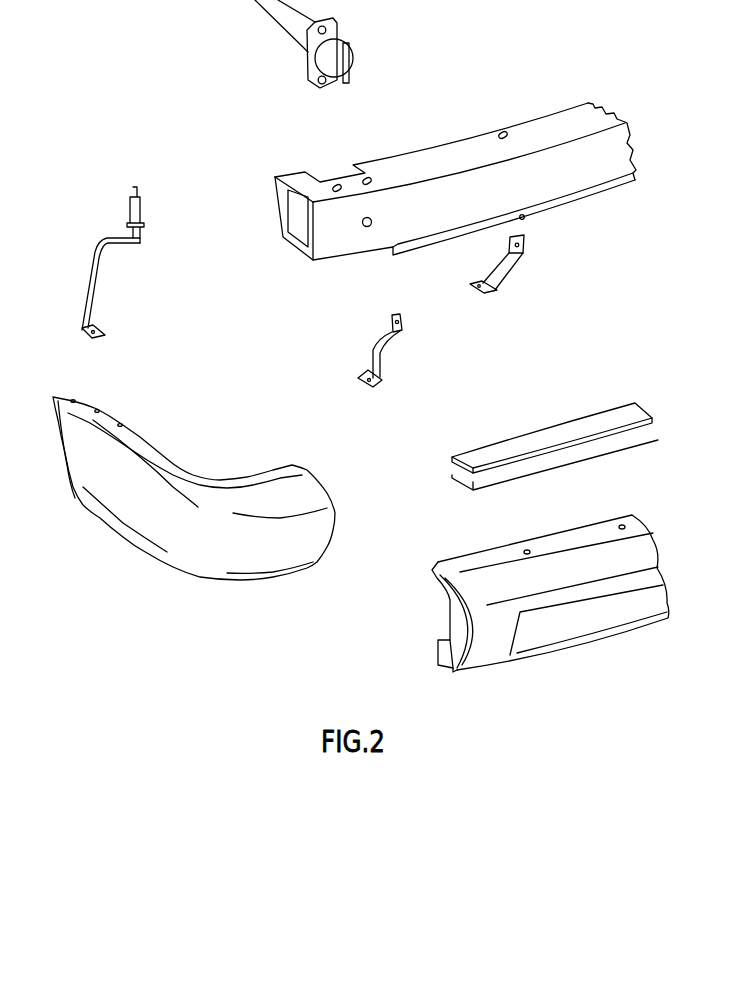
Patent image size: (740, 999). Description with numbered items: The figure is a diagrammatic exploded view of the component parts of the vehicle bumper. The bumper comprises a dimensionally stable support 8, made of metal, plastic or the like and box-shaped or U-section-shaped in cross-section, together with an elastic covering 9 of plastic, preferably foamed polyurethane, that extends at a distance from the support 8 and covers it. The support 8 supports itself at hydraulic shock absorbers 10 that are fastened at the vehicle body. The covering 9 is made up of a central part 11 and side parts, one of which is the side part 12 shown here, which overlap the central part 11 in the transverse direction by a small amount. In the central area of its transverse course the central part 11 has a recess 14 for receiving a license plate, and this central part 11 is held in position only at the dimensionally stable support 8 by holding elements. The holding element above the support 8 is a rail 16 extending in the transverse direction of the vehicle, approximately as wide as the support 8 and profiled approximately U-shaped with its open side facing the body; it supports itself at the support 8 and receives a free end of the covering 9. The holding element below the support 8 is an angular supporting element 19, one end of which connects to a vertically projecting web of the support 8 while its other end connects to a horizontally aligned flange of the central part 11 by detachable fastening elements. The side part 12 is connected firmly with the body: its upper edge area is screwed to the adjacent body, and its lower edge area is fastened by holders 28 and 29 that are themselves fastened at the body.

The dimensionally stable support 8 is at (557, 190).
The elastic covering 9 is at (269, 590).
The hydraulic shock absorber 10 is at (267, 12).
The central part 11 is at (559, 586).
The side part 12 is at (105, 523).
The recess 14 is at (585, 618).
The rail 16 is at (607, 420).
The angular supporting element 19 is at (503, 270).
The holder 28 is at (380, 353).
The holder 29 is at (93, 252).